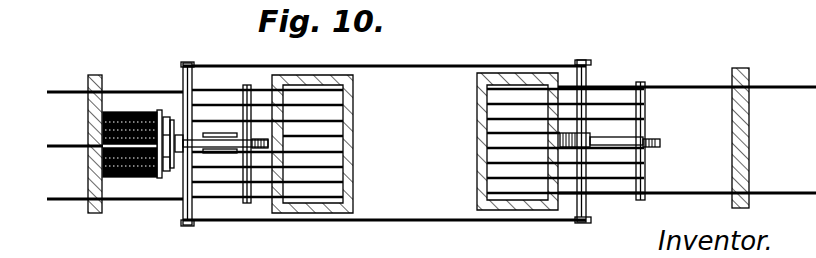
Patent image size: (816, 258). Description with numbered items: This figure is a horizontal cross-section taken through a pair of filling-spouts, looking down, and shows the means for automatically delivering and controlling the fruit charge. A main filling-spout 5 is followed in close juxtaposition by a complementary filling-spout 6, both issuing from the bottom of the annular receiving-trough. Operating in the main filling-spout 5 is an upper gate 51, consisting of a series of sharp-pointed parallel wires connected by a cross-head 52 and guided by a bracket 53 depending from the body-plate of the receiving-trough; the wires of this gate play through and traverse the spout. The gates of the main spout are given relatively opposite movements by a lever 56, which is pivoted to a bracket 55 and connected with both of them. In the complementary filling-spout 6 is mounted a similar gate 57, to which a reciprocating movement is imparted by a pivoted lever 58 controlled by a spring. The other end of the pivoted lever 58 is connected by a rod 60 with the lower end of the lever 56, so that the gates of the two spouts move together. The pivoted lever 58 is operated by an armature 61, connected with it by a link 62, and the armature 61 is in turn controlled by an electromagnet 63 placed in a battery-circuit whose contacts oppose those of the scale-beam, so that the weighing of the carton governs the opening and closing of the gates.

The main filling-spout 5 is at (478, 83).
The complementary filling-spout 6 is at (353, 96).
The upper gate 51 is at (486, 116).
The cross-head 52 is at (644, 107).
The bracket 53 is at (735, 122).
The bracket 55 is at (573, 145).
The lever 56 is at (651, 144).
The gate 57 is at (342, 141).
The pivoted lever 58 is at (230, 144).
The rod 60 is at (413, 64).
The armature 61 is at (168, 181).
The link 62 is at (188, 183).
The electromagnet 63 is at (127, 115).